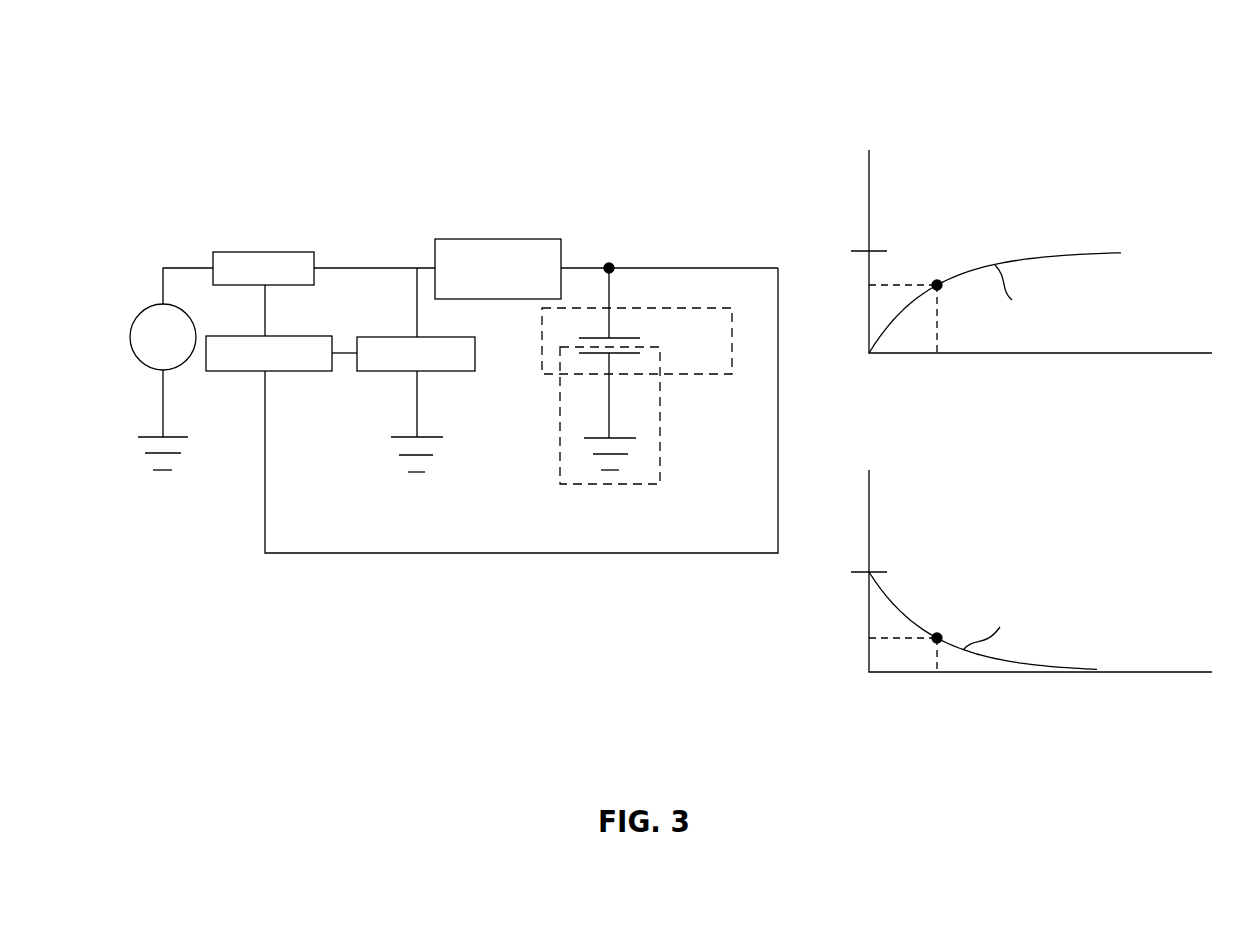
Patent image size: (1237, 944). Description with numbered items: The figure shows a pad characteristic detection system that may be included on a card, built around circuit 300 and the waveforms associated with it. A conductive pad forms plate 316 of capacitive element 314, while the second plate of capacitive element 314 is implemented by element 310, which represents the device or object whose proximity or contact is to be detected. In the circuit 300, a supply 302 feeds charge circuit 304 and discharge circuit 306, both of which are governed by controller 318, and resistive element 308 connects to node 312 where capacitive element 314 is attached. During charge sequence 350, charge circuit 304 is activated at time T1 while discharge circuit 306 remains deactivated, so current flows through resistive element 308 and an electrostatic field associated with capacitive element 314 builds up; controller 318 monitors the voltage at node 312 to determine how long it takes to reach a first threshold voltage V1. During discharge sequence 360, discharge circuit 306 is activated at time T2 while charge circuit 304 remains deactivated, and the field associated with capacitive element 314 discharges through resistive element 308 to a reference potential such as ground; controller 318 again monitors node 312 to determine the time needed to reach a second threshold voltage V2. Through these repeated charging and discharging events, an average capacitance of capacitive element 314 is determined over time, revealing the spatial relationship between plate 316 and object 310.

The circuit 300 is at (248, 185).
The voltage source 302 is at (130, 336).
The charge circuit 304 is at (247, 252).
The discharge circuit 306 is at (357, 362).
The resistive element 308 is at (515, 300).
The element 310 is at (660, 475).
The node 312 is at (612, 264).
The capacitive element 314 is at (732, 352).
The plate 316 is at (628, 337).
The controller 318 is at (207, 362).
The charge sequence 350 is at (1060, 180).
The discharge sequence 360 is at (1100, 530).